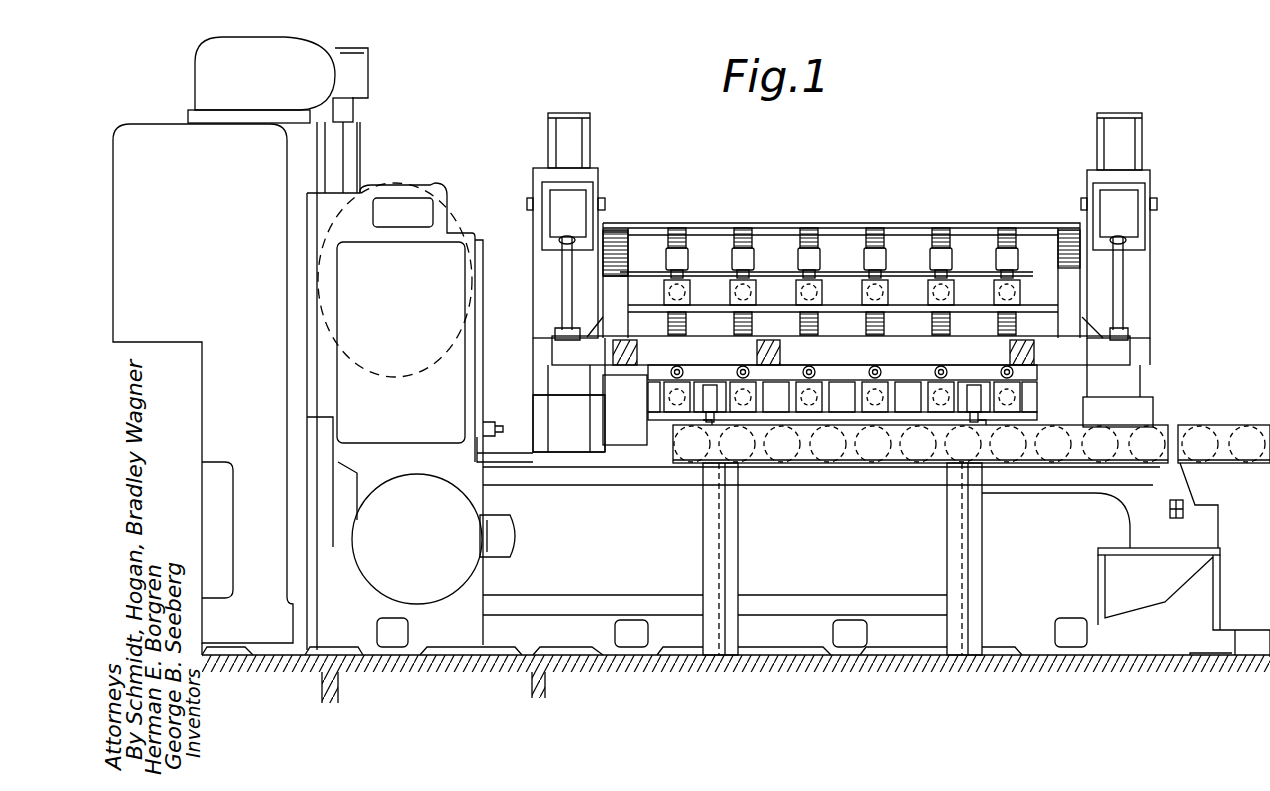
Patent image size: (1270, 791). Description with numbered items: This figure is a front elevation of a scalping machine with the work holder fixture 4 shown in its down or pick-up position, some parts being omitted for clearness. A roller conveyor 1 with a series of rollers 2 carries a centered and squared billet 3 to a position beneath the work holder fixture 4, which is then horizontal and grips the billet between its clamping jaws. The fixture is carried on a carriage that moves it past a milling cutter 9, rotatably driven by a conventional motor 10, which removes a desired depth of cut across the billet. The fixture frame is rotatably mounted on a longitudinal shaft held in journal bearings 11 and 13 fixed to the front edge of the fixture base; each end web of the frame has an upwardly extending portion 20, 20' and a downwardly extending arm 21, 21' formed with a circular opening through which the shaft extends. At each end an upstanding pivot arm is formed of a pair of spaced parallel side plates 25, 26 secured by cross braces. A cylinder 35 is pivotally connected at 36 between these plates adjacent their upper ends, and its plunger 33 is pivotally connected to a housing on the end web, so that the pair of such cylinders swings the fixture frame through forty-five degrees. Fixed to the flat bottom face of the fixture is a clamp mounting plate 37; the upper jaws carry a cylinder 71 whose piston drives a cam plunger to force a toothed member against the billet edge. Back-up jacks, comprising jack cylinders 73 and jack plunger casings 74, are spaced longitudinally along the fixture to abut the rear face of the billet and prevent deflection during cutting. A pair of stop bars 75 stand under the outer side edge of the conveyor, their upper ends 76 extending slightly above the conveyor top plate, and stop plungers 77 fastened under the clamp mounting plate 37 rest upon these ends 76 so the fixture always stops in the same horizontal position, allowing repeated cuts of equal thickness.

The roller conveyor 1 is at (1228, 468).
The rollers 2 is at (1245, 428).
The billet 3 is at (1030, 402).
The work holder fixture 4 is at (678, 222).
The milling cutter 9 is at (414, 376).
The motor 10 is at (370, 255).
The journal bearing 11 is at (1130, 404).
The journal bearing 13 is at (556, 415).
The upwardly extending portion 20 is at (841, 265).
The upwardly extending portion 20' is at (642, 228).
The downwardly extending arm 21 is at (920, 429).
The downwardly extending arm 21' is at (597, 453).
The side plate 25 is at (598, 186).
The side plate 26 is at (536, 194).
The plunger 33 is at (565, 287).
The cylinder 35 is at (560, 125).
The pivotal connection 36 is at (530, 210).
The clamp mounting plate 37 is at (841, 338).
The cylinder 71 is at (806, 392).
The jack cylinder 73 is at (991, 293).
The jack plunger casing 74 is at (733, 258).
The stop bar 75 is at (707, 538).
The upper end of stop bar 76 is at (708, 420).
The stop plunger 77 is at (705, 400).